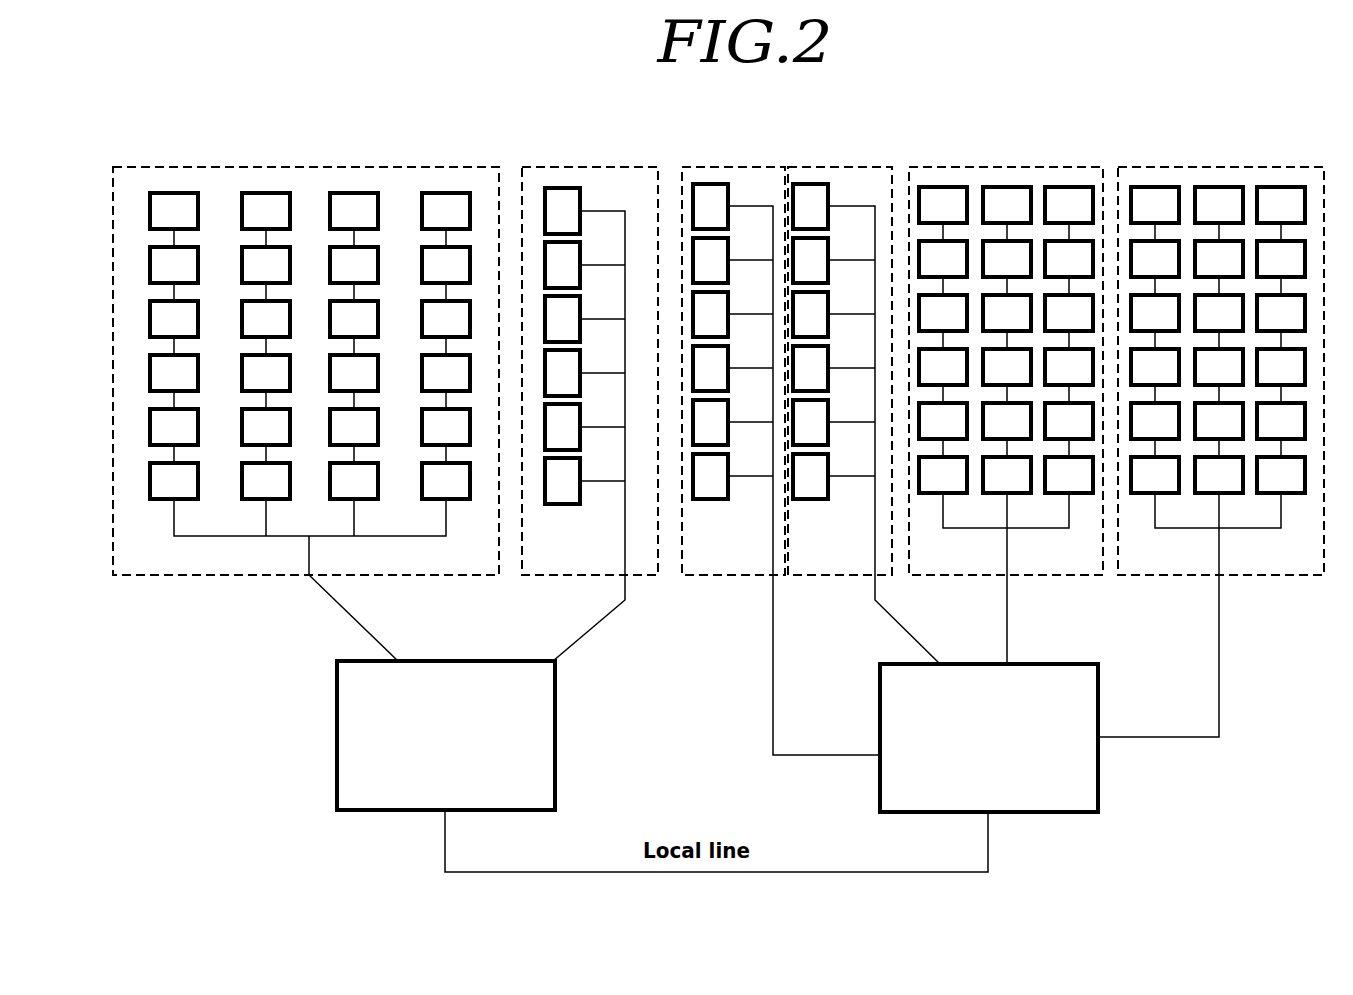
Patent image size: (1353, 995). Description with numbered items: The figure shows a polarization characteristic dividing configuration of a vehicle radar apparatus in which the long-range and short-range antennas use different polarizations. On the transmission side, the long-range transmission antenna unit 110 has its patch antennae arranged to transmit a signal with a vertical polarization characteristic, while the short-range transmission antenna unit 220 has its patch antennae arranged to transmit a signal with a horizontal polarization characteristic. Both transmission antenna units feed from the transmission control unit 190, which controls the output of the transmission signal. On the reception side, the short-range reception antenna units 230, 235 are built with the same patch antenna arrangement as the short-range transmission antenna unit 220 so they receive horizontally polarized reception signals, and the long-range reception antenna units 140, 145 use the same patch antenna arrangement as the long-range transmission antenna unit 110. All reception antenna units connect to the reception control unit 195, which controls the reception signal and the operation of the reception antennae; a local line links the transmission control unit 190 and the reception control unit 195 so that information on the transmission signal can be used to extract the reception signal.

The long-range transmission antenna unit 110 is at (418, 165).
The short-range transmission antenna unit 220 is at (636, 165).
The short-range reception antenna unit 230 is at (772, 165).
The short-range reception antenna unit 235 is at (864, 165).
The long-range reception antenna unit 140 is at (1069, 165).
The long-range reception antenna unit 145 is at (1284, 165).
The transmission control unit 190 is at (373, 812).
The reception control unit 195 is at (1068, 814).